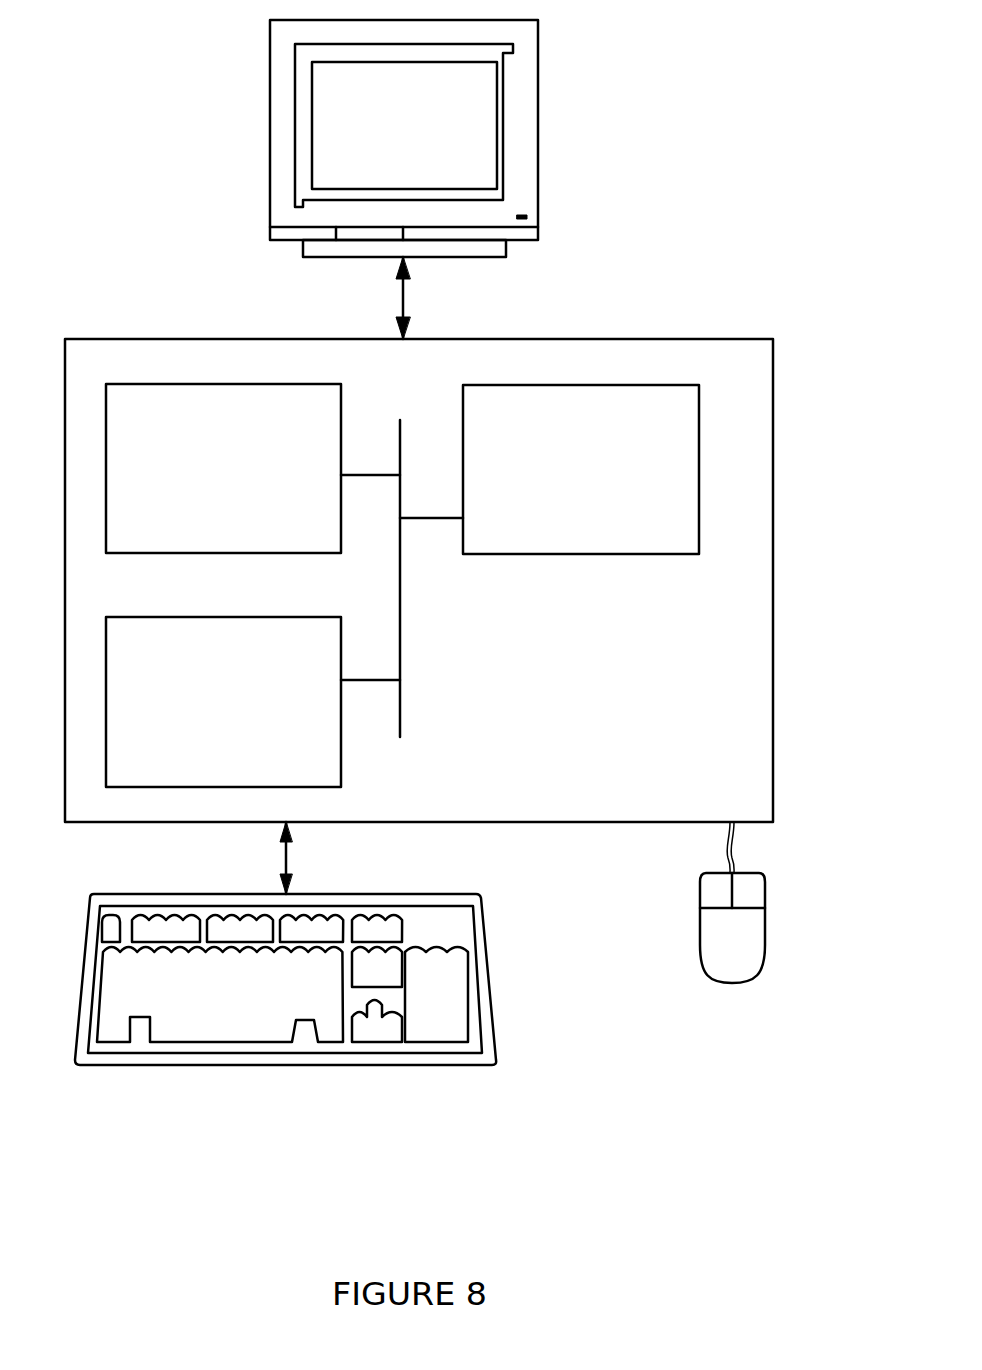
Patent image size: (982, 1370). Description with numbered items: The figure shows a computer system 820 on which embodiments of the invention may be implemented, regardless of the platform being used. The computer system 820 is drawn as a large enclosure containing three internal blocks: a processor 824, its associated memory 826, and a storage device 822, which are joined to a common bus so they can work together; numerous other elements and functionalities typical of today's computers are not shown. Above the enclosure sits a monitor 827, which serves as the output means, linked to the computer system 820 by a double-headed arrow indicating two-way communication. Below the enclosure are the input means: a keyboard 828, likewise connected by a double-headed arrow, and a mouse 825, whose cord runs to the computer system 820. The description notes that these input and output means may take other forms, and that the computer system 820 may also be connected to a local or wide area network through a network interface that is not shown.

The computer system 820 is at (740, 186).
The storage device 822 is at (582, 482).
The processor 824 is at (202, 482).
The mouse 825 is at (711, 952).
The memory 826 is at (199, 716).
The monitor 827 is at (382, 142).
The keyboard 828 is at (192, 1019).